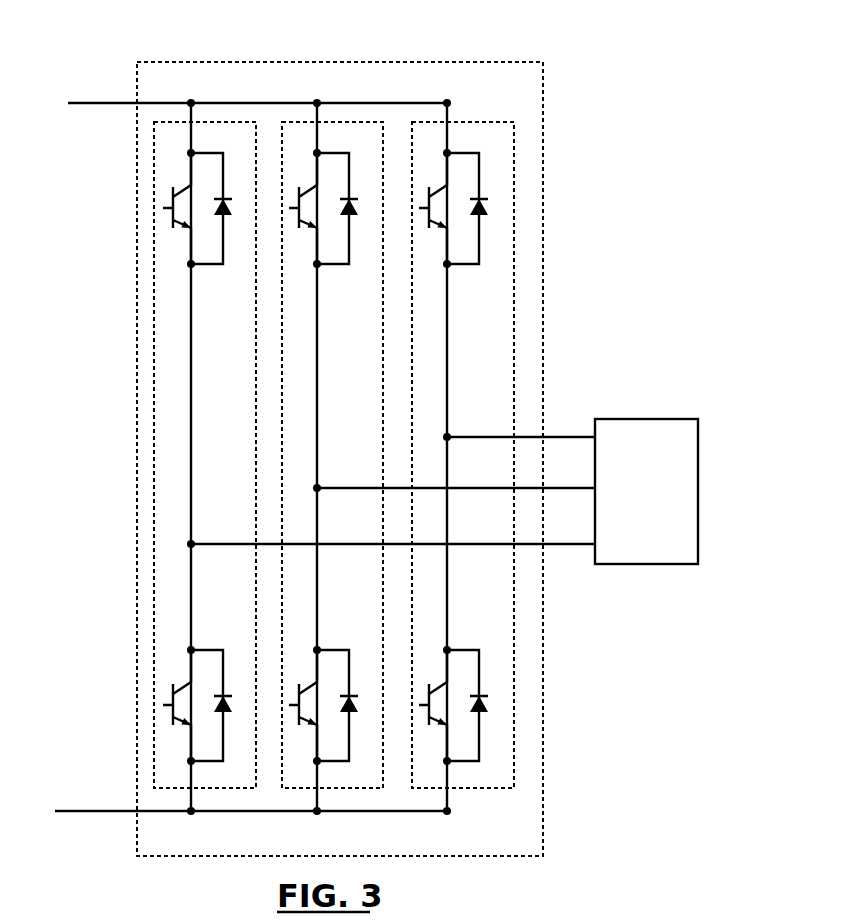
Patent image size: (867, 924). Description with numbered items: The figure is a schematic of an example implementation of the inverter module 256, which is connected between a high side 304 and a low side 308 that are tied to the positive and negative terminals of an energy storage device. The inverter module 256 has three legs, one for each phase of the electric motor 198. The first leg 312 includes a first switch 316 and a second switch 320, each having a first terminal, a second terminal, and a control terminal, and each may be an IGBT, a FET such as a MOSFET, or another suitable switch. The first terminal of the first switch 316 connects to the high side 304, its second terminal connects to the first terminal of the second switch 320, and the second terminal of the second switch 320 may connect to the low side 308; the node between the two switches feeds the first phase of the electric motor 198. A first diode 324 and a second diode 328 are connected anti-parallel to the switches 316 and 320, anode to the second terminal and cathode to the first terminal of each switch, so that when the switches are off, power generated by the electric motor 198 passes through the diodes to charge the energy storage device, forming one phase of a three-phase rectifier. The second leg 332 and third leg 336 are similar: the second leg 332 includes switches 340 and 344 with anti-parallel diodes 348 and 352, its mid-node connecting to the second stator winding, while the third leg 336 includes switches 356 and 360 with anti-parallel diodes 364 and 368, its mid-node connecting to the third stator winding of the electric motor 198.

The electric motor 198 is at (647, 564).
The inverter module 256 is at (543, 82).
The high side 304 is at (95, 103).
The low side 308 is at (95, 811).
The first leg 312 is at (207, 122).
The first switch 316 is at (160, 174).
The second switch 320 is at (164, 667).
The first diode 324 is at (231, 179).
The second diode 328 is at (234, 667).
The second leg 332 is at (334, 122).
The switch 340 is at (301, 169).
The switch 344 is at (299, 666).
The anti-parallel diode 348 is at (360, 179).
The anti-parallel diode 352 is at (359, 674).
The third leg 336 is at (473, 122).
The switch 356 is at (434, 172).
The switch 360 is at (433, 663).
The anti-parallel diode 364 is at (502, 203).
The anti-parallel diode 368 is at (501, 695).